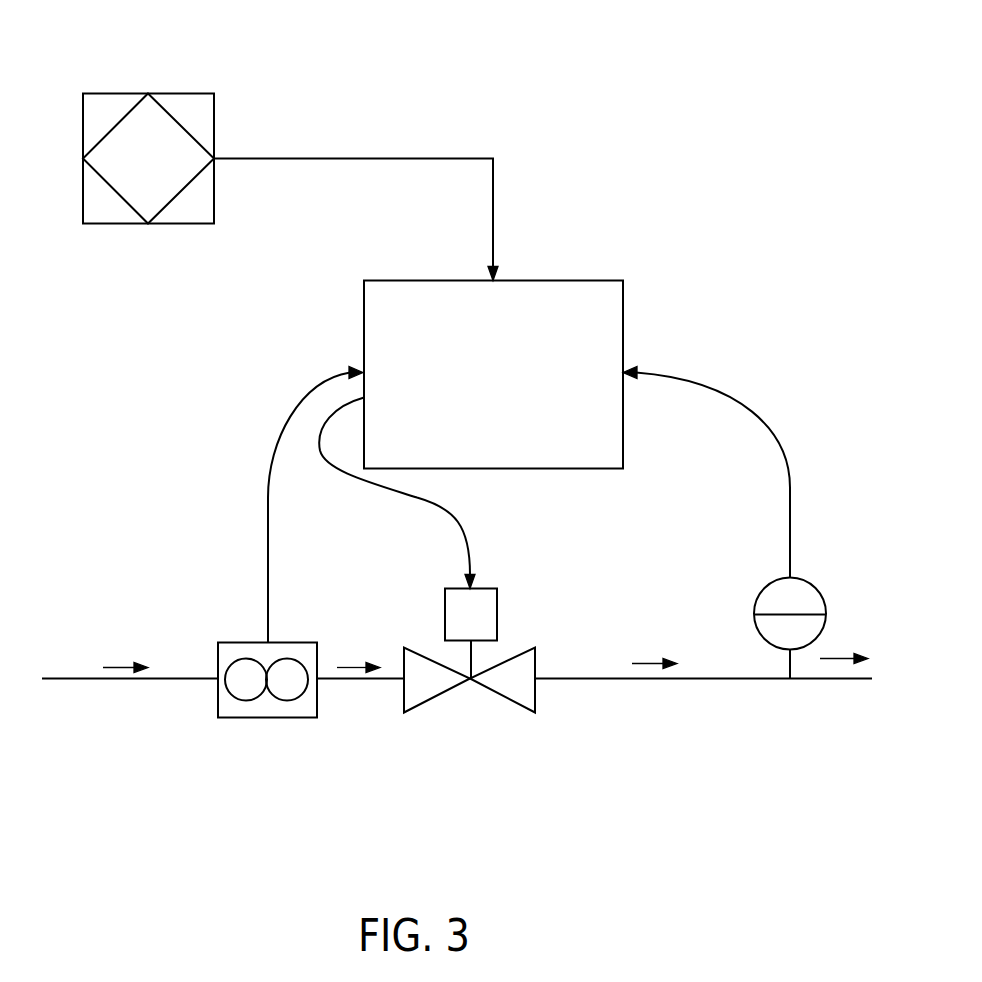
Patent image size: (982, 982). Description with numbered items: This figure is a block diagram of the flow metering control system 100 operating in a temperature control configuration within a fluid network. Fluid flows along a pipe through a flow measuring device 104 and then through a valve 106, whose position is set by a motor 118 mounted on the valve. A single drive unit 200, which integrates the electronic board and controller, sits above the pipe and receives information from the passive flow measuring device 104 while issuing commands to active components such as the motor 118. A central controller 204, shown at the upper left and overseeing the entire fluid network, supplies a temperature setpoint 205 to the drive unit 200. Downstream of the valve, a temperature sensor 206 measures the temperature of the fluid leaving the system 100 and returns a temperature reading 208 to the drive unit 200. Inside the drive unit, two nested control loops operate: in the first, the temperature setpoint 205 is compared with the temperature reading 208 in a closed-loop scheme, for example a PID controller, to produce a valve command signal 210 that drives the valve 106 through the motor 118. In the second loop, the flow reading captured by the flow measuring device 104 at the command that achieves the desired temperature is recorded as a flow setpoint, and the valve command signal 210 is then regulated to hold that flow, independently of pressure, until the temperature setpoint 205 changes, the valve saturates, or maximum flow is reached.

The system 100 is at (632, 792).
The flow measuring device 104 is at (235, 717).
The valve 106 is at (510, 703).
The motor 118 is at (497, 608).
The drive unit 200 is at (593, 238).
The central controller 204 is at (177, 93).
The temperature setpoint 205 is at (350, 157).
The temperature sensor 206 is at (822, 586).
The temperature reading 208 is at (747, 407).
The valve command signal 210 is at (466, 525).